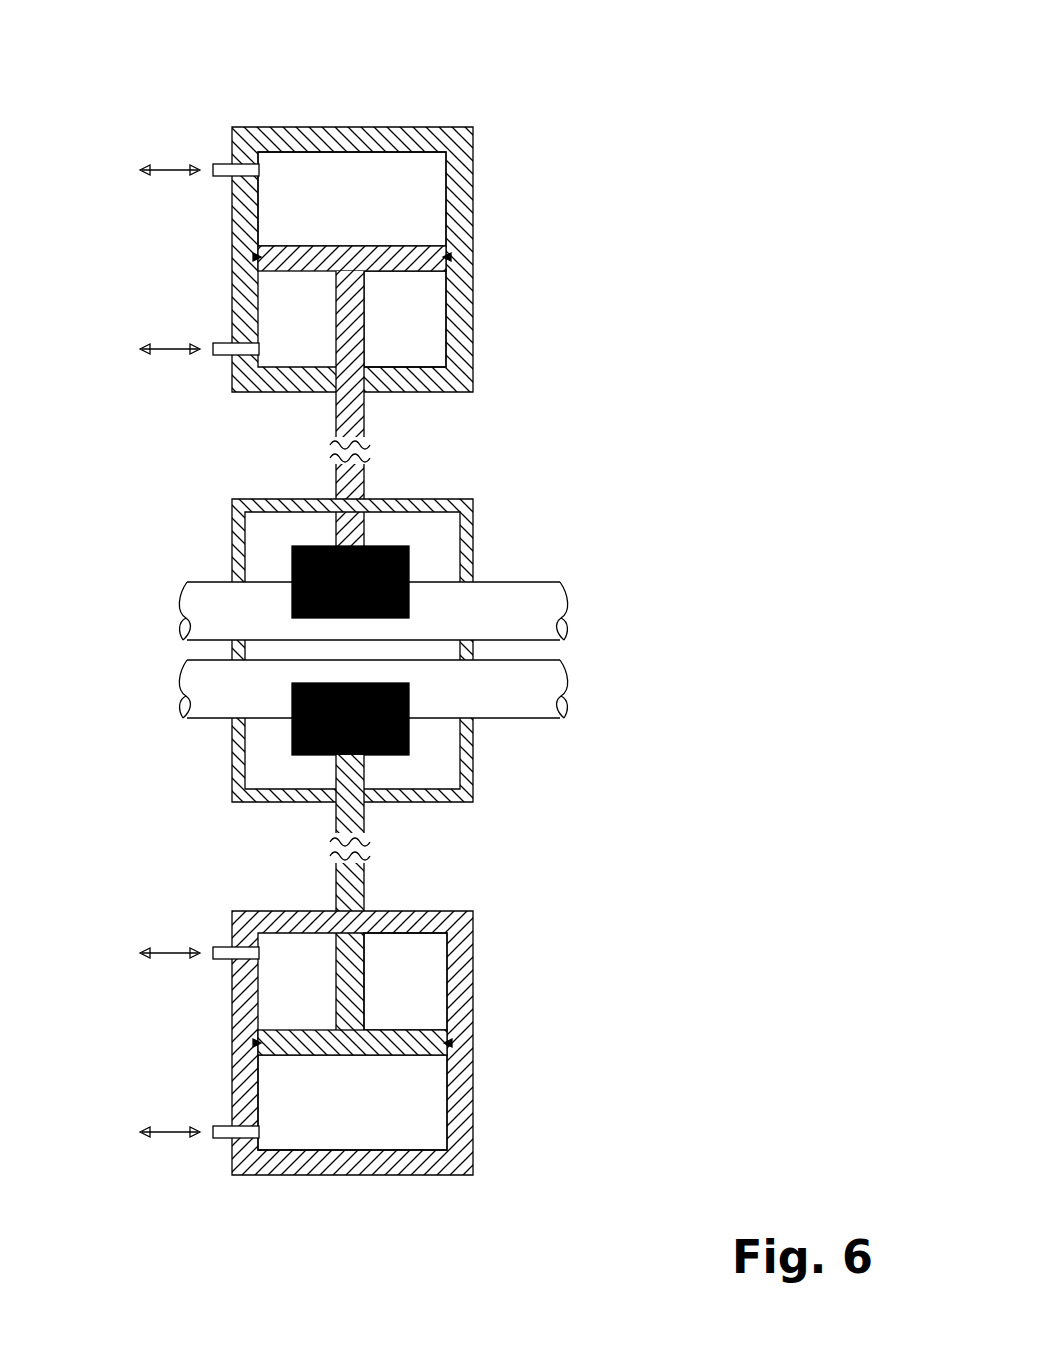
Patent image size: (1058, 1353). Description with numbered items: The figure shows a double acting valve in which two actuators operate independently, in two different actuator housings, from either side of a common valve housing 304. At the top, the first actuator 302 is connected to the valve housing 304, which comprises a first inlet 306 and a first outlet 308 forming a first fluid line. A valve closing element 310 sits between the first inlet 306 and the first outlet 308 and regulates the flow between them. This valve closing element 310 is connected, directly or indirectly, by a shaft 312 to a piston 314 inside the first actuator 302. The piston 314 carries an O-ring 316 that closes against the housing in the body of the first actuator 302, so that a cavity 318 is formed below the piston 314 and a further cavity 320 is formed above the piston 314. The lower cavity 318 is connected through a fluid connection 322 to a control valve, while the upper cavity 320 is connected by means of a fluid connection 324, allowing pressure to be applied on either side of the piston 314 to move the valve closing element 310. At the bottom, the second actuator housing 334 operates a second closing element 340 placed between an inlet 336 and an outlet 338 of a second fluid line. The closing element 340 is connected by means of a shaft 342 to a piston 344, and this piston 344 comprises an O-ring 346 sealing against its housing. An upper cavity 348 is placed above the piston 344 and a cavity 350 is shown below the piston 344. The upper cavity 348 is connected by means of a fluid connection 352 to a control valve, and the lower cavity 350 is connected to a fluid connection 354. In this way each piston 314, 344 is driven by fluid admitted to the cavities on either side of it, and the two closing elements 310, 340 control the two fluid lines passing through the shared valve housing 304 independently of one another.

The first actuator 302 is at (381, 228).
The valve housing 304 is at (374, 599).
The first inlet 306 is at (187, 582).
The first outlet 308 is at (512, 582).
The valve closing element 310 is at (380, 546).
The shaft 312 is at (358, 488).
The piston 314 is at (418, 247).
The O-ring 316 is at (448, 257).
The cavity 318 is at (415, 340).
The cavity 320 is at (352, 199).
The first lower port 322 is at (213, 355).
The fluid connection 324 is at (213, 165).
The second actuator housing 334 is at (381, 1011).
The inlet 336 is at (188, 718).
The outlet 338 is at (510, 717).
The closing element 340 is at (380, 755).
The shaft 342 is at (360, 812).
The piston 344 is at (428, 1055).
The O-ring 346 is at (449, 1043).
The upper cavity 348 is at (415, 960).
The cavity 350 is at (352, 1102).
The fluid connection 352 is at (213, 947).
The fluid connection 354 is at (213, 1138).